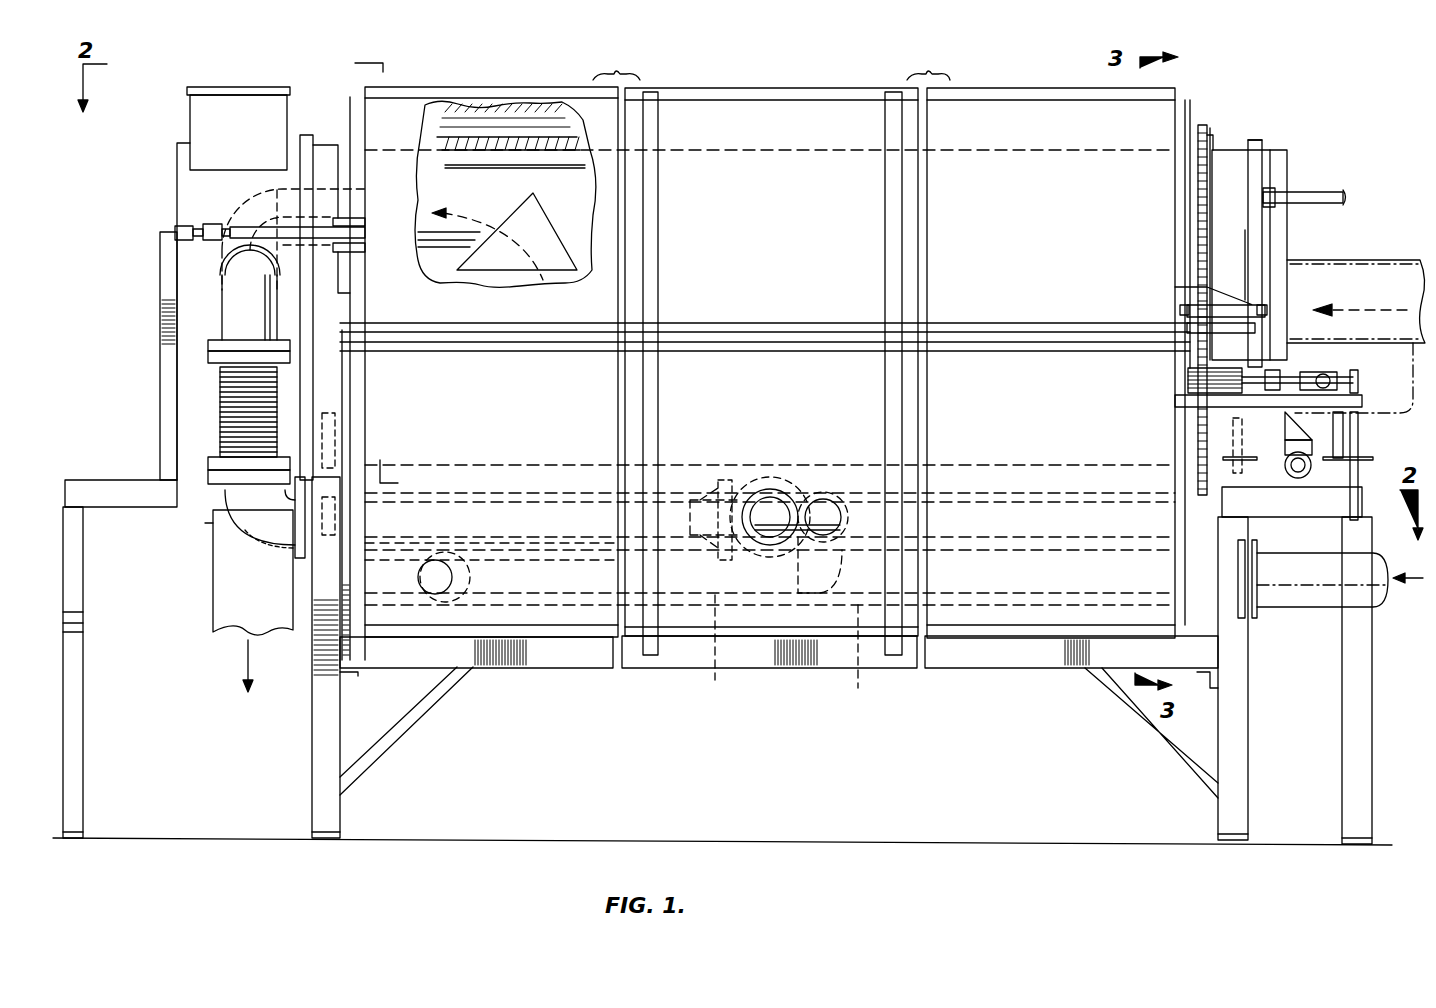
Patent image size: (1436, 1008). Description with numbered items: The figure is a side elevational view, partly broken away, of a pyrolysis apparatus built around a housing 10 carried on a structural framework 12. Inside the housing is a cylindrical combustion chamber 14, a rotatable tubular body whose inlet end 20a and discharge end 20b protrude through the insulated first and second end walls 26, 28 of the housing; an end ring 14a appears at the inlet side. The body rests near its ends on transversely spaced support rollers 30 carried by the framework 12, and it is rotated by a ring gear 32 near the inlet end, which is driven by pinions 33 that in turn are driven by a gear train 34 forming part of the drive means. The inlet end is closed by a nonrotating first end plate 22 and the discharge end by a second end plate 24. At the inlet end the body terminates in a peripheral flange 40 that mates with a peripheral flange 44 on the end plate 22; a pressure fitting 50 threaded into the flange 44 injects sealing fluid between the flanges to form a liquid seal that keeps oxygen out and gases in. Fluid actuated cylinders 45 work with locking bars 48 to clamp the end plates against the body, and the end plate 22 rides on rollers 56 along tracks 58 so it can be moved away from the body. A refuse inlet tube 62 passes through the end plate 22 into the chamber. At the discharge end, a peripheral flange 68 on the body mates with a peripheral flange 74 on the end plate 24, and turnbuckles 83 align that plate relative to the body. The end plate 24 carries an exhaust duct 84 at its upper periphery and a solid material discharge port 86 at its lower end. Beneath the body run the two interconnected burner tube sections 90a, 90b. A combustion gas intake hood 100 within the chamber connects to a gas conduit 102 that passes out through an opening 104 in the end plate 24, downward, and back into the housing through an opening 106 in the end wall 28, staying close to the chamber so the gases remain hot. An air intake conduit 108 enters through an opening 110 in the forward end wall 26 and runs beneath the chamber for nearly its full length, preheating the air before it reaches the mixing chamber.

The housing 10 is at (762, 132).
The structural framework 12 is at (1063, 668).
The combustion chamber 14 is at (563, 192).
The end ring 14a is at (1245, 270).
The inlet end 20a is at (1232, 223).
The discharge end 20b is at (340, 140).
The first end plate 22 is at (1280, 165).
The second end plate 24 is at (190, 186).
The first end wall 26 is at (1183, 160).
The second end wall 28 is at (358, 112).
The support rollers 30 is at (355, 420).
The ring gear 32 is at (1210, 170).
The pinions 33 is at (1200, 365).
The gear train 34 is at (1310, 372).
The peripheral flange 40 is at (1255, 145).
The peripheral flange 44 is at (1265, 140).
The fluid actuated cylinders 45 is at (247, 233).
The locking bars 48 is at (1265, 313).
The pressure fitting 50 is at (1275, 190).
The rollers 56 is at (1298, 478).
The tracks 58 is at (1365, 480).
The refuse inlet tube 62 is at (1395, 265).
The peripheral flange 68 is at (310, 177).
The peripheral flange 74 is at (300, 152).
The turnbuckles 83 is at (177, 228).
The exhaust duct 84 is at (200, 118).
The solid material discharge port 86 is at (218, 604).
The burner tube section 90a is at (1010, 498).
The burner tube section 90b is at (512, 498).
The combustion gas intake hood 100 is at (568, 265).
The gas conduit 102 is at (230, 312).
The opening 104 is at (232, 255).
The opening 106 is at (370, 497).
The air intake conduit 108 is at (792, 500).
The opening 110 is at (1178, 553).